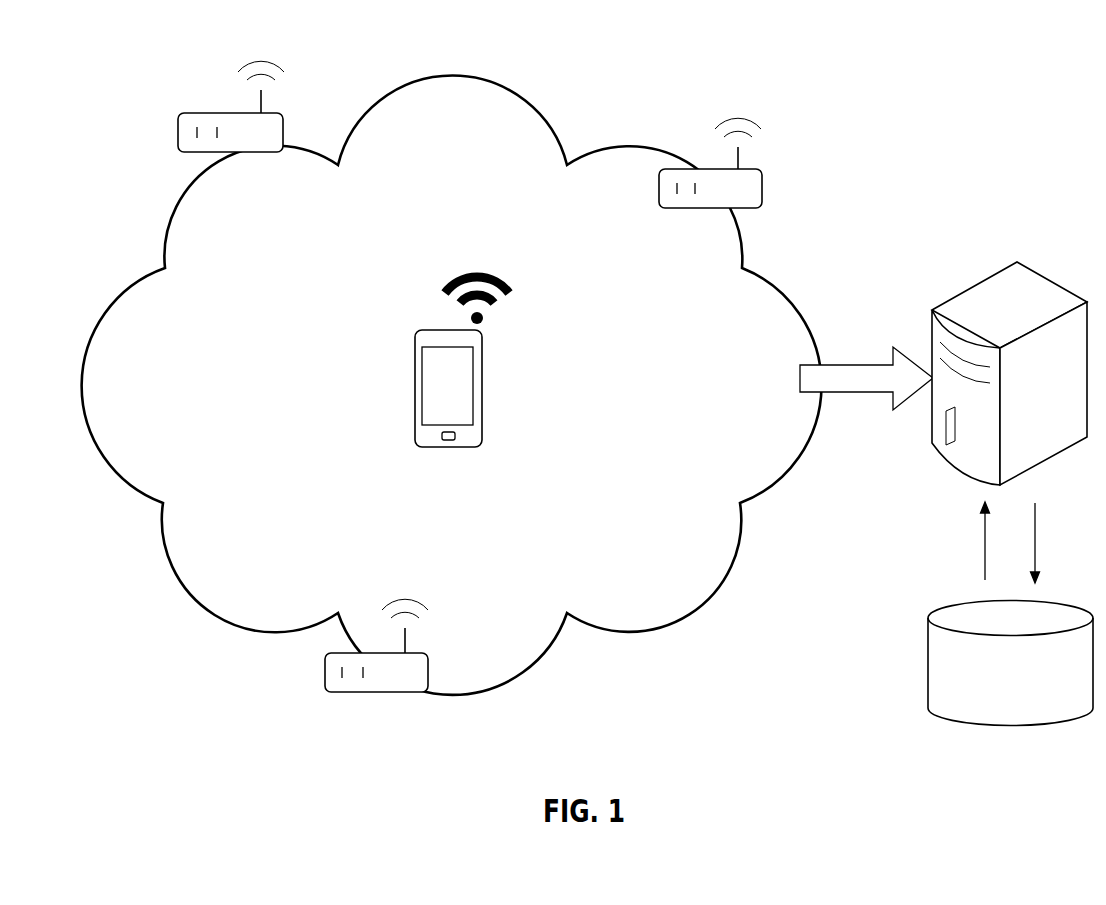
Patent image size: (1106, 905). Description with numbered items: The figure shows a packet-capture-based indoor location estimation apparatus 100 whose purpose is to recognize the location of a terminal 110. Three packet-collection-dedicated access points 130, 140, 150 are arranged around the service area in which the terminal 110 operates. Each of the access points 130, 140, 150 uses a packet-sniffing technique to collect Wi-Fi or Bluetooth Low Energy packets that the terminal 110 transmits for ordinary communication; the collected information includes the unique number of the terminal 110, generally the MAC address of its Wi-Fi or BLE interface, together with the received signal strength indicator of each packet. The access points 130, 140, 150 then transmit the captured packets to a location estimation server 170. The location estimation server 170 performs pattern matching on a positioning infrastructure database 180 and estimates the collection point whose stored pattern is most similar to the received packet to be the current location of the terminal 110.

The apparatus for estimating an indoor location based on packet capture 100 is at (1008, 46).
The terminal 110 is at (483, 386).
The packet-collection-dedicated access point 130 is at (200, 112).
The packet-collection-dedicated access point 140 is at (378, 694).
The packet-collection-dedicated access point 150 is at (763, 185).
The location estimation server 170 is at (1052, 278).
The positioning infrastructure database 180 is at (1008, 725).